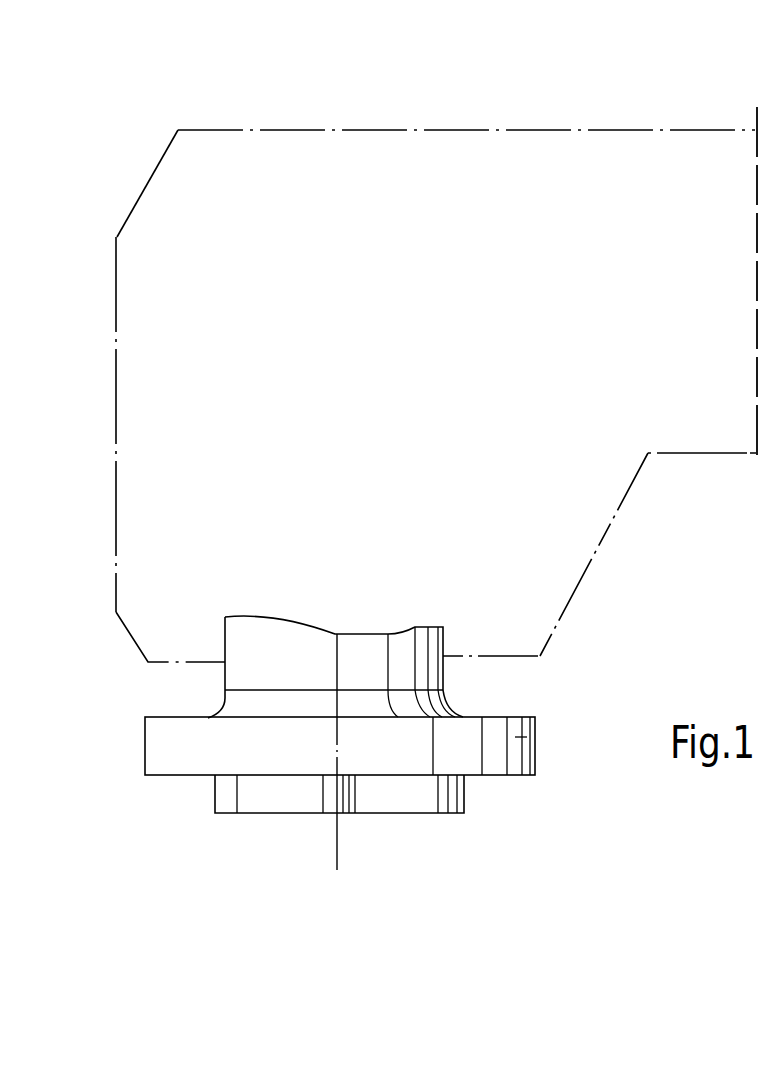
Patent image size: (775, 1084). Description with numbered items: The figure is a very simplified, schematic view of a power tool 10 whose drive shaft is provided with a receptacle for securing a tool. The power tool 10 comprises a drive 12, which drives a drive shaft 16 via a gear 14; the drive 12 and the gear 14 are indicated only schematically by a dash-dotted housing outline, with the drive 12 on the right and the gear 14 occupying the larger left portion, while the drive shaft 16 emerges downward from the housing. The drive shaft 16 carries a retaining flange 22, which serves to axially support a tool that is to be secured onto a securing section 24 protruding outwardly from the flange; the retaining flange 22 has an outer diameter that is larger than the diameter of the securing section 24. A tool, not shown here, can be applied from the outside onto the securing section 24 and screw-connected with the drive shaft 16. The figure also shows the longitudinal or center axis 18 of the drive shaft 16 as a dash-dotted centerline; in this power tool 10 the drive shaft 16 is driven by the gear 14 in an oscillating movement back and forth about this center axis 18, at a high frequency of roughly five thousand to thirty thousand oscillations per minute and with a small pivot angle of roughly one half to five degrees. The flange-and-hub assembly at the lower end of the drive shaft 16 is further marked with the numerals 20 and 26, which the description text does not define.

The power tool 10 is at (574, 104).
The drive 12 is at (677, 308).
The gear 14 is at (330, 390).
The drive shaft 16 is at (263, 652).
The center axis 18 is at (342, 843).
The flange part 20 is at (568, 778).
The retaining flange 22 is at (535, 733).
The securing section 24 is at (420, 793).
The hub shoulder 26 is at (215, 808).